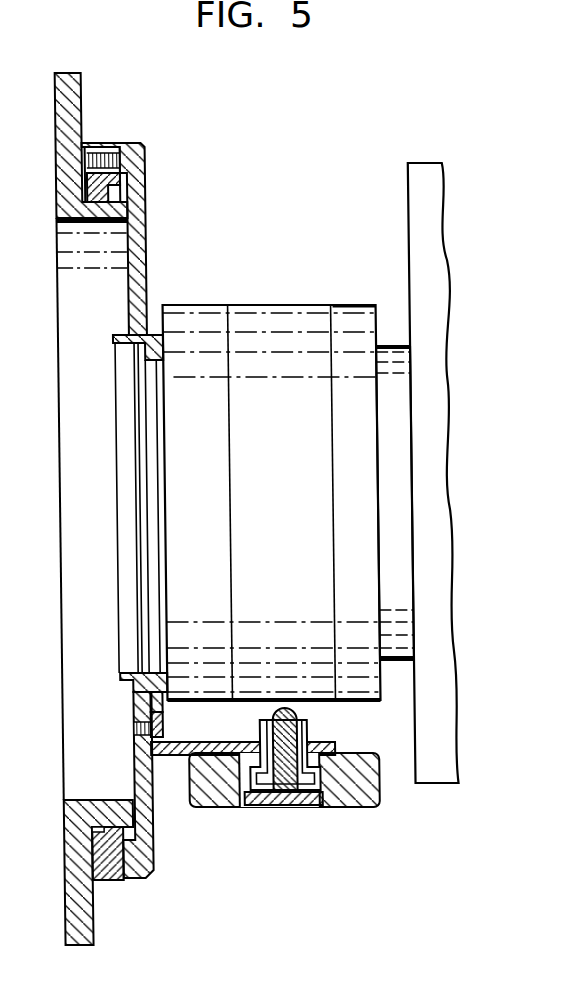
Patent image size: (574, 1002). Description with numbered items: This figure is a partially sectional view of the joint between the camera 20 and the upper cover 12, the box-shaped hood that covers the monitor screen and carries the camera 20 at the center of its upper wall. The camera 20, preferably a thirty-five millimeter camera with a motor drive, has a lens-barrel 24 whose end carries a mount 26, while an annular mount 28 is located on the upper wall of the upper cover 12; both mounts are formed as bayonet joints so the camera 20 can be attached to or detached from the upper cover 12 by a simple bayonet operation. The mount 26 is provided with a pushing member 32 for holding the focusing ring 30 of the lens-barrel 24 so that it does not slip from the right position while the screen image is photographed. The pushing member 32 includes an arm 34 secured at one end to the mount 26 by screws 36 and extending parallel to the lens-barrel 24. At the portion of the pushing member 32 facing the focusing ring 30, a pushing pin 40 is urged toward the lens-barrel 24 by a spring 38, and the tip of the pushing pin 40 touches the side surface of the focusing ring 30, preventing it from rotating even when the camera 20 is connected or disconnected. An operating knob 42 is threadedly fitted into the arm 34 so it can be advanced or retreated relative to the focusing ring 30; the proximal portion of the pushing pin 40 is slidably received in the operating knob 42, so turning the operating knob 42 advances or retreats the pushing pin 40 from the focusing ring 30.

The upper cover 12 is at (80, 88).
The camera 20 is at (417, 197).
The lens-barrel 24 is at (268, 300).
The mount 26 is at (132, 148).
The annular mount 28 is at (102, 210).
The focusing ring 30 is at (328, 660).
The pushing member 32 is at (284, 768).
The arm 34 is at (169, 756).
The screws 36 is at (130, 728).
The spring 38 is at (294, 798).
The pushing pin 40 is at (258, 706).
The operating knob 42 is at (216, 799).